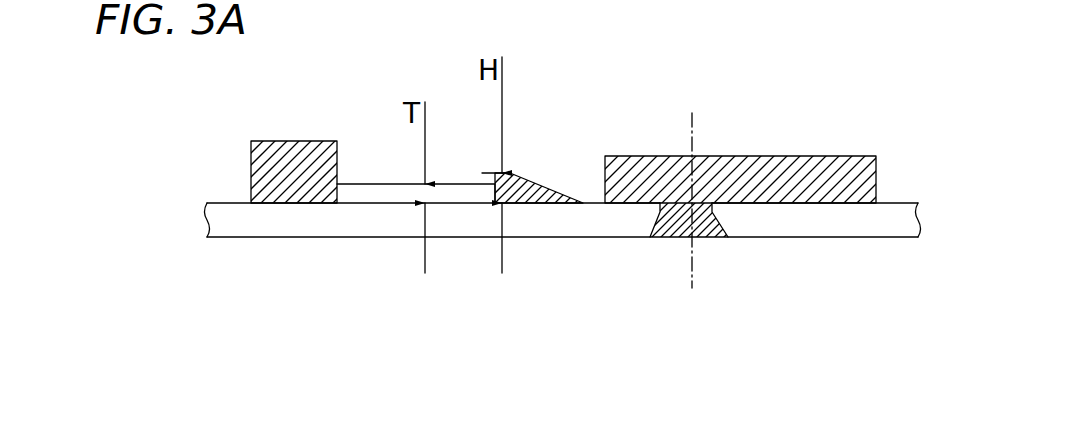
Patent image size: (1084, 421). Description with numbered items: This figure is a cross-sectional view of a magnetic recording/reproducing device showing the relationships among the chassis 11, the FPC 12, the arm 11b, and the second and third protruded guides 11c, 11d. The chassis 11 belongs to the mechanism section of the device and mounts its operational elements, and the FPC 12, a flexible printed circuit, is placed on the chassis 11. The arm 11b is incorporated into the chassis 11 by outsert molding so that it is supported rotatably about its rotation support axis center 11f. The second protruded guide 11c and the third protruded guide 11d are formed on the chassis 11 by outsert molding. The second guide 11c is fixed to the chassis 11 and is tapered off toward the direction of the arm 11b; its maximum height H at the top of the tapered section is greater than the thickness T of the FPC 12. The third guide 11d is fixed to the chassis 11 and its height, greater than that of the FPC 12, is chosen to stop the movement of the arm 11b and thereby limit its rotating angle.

The chassis 11 is at (843, 228).
The arm 11b is at (830, 168).
The second protruded guide 11c is at (532, 193).
The third protruded guide 11d is at (272, 163).
The rotation support axis center 11f is at (692, 113).
The FPC 12 is at (383, 193).